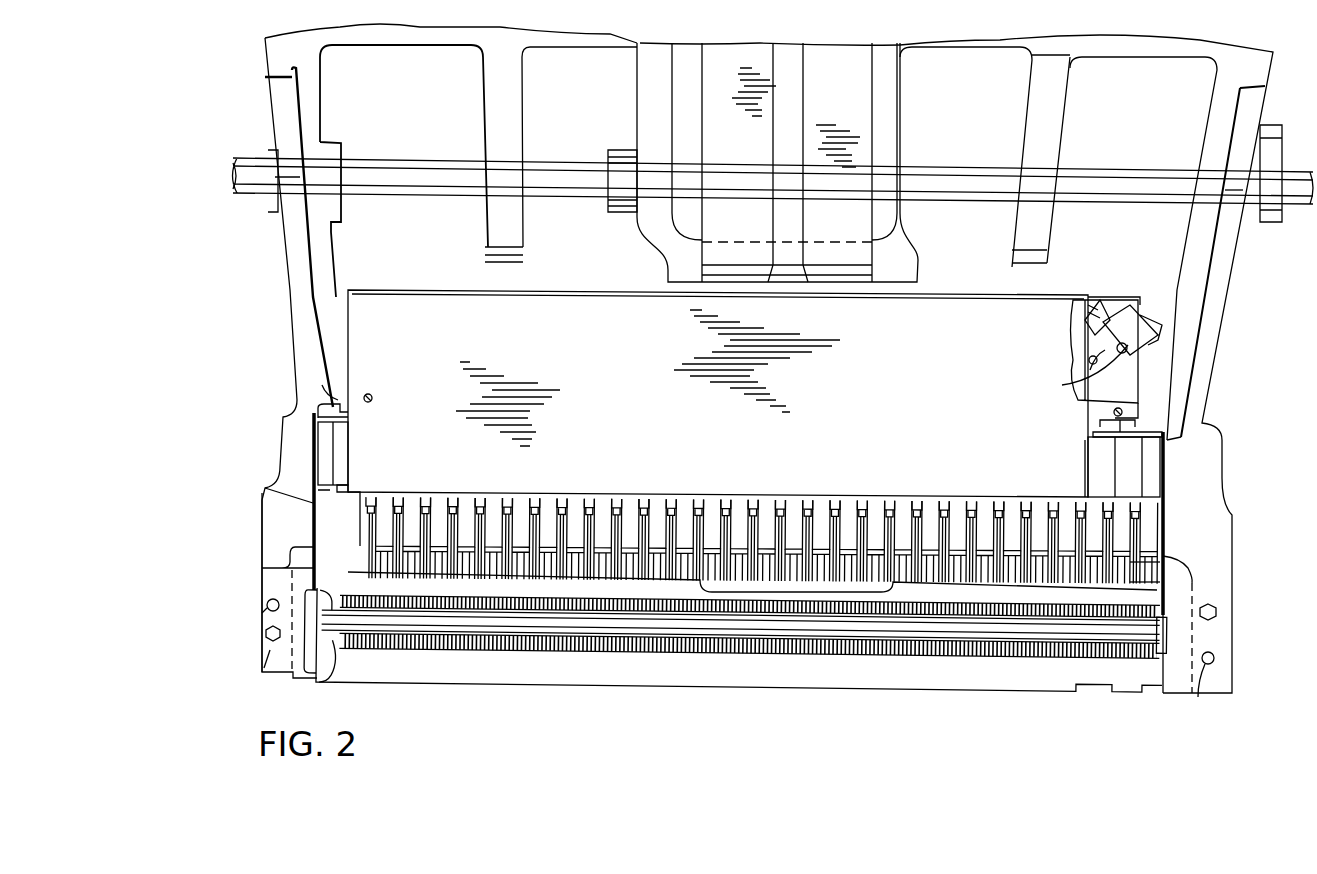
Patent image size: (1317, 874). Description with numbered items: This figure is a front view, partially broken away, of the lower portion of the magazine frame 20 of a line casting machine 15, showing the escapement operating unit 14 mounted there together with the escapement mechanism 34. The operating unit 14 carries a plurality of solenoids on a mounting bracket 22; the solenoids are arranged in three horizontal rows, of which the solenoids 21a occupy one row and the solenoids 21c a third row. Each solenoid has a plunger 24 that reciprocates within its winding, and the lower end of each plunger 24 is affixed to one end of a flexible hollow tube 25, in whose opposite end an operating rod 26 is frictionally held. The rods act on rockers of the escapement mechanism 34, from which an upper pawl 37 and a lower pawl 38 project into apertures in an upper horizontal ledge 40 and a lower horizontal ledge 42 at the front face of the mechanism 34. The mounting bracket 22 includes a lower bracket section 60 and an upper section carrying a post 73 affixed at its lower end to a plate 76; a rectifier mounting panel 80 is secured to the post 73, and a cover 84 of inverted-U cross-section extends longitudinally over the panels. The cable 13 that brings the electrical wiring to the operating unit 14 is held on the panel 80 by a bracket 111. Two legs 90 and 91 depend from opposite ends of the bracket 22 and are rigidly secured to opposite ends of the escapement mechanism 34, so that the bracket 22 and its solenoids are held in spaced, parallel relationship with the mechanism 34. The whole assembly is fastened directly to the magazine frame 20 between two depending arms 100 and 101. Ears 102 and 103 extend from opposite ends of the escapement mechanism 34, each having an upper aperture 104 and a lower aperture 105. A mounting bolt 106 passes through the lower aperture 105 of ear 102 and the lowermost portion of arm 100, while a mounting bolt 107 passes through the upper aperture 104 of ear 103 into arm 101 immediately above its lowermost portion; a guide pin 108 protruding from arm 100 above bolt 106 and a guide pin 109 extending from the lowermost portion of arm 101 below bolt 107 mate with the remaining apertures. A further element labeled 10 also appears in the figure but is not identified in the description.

The printer 10 is at (1220, 613).
The cable 13 is at (1135, 294).
The escapement operating unit 14 is at (348, 331).
The line casting machine 15 is at (240, 45).
The magazine support frame 20 is at (265, 93).
The solenoids 21a is at (1130, 452).
The solenoids 21c is at (1115, 532).
The mounting bracket 22 is at (300, 408).
The plunger 24 is at (1140, 557).
The elongated hollow tube 25 is at (1150, 570).
The operating rod 26 is at (1152, 582).
The escapement mechanism 34 is at (760, 682).
The upper pawl 37 is at (528, 597).
The lower pawl 38 is at (518, 650).
The upper horizontal ledge 40 is at (328, 594).
The lower horizontal ledge 42 is at (322, 682).
The lower bracket section 60 is at (1148, 470).
The post 73 is at (1132, 421).
The plate 76 is at (330, 407).
The rectifier mounting panel 80 is at (1140, 386).
The cover 84 is at (435, 290).
The leg 90 is at (1178, 488).
The leg 91 is at (290, 493).
The depending arm 100 is at (262, 522).
The depending arm 101 is at (1200, 592).
The ear 102 is at (280, 563).
The ear 103 is at (1230, 688).
The upper aperture 104 is at (267, 604).
The lower aperture 105 is at (265, 638).
The mounting bolt 106 is at (265, 658).
The mounting bolt 107 is at (1216, 616).
The guide pin 108 is at (268, 610).
The guide pin 109 is at (1202, 695).
The bracket 111 is at (1078, 383).